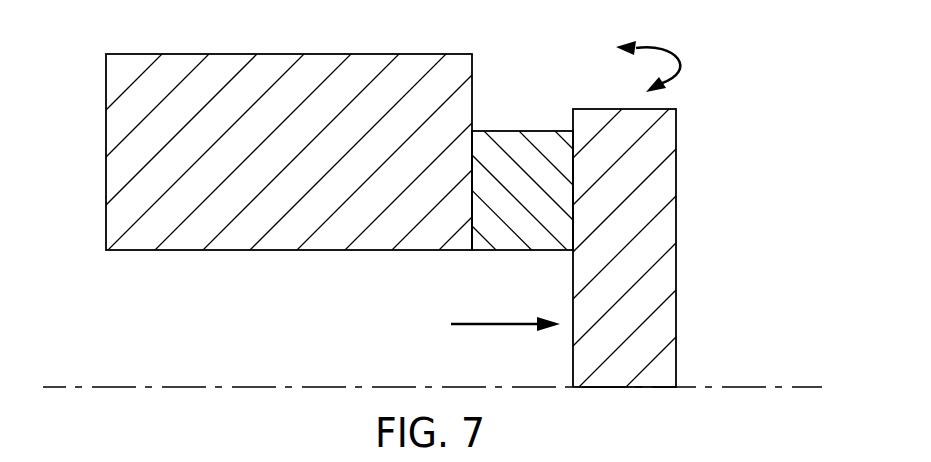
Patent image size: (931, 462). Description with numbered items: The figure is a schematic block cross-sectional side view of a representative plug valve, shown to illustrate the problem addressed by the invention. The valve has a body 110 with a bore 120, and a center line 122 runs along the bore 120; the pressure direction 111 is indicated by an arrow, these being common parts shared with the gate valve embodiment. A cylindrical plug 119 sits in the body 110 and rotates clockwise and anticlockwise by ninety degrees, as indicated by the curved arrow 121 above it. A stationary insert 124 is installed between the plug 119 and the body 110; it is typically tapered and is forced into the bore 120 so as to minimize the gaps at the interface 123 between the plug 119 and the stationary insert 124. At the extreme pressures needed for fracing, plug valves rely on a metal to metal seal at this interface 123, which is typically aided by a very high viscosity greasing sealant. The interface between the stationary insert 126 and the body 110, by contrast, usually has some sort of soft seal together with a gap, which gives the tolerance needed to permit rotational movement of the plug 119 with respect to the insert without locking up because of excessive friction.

The body 110 is at (107, 128).
The pressure direction 111 is at (494, 327).
The cylindrical plug 119 is at (667, 180).
The bore 120 is at (248, 365).
The arrow 121 is at (668, 50).
The center line 122 is at (745, 387).
The interface 123 is at (573, 231).
The stationary insert 124 is at (508, 140).
The stationary insert 126 is at (472, 202).